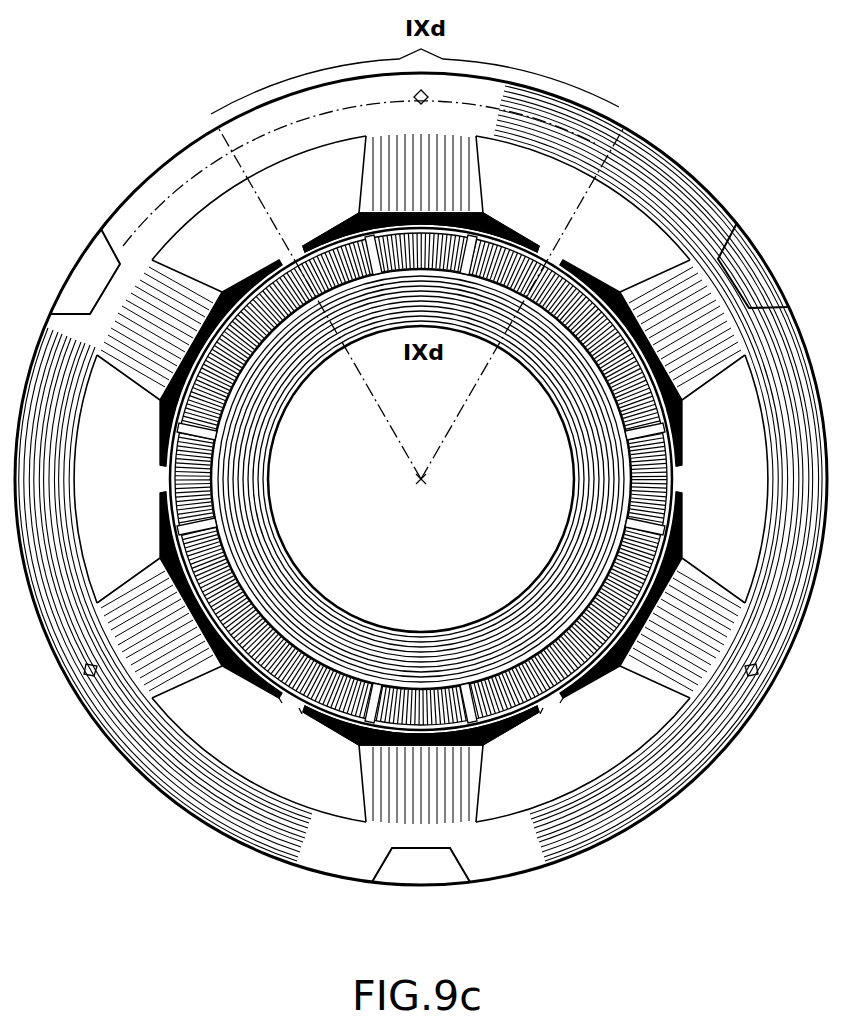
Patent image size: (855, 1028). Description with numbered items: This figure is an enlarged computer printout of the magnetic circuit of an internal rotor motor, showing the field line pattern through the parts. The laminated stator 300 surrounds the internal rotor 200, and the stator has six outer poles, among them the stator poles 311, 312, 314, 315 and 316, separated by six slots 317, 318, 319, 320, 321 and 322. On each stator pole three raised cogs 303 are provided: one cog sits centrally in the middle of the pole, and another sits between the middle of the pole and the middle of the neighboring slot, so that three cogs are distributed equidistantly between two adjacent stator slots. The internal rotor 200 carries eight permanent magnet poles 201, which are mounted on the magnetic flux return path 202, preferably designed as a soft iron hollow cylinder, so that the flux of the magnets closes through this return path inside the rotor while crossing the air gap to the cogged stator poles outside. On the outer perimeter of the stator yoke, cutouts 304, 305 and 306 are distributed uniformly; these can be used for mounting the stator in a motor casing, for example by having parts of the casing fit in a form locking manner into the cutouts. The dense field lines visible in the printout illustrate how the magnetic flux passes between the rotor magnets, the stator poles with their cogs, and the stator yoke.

The internal rotor 200 is at (524, 368).
The permanent magnet poles 201 is at (270, 418).
The magnetic flux return path 202 is at (377, 640).
The laminated stator 300 is at (630, 118).
The cogs 303 is at (348, 216).
The cutout 304 is at (417, 868).
The cutout 305 is at (85, 290).
The cutout 306 is at (752, 262).
The stator pole 311 is at (680, 640).
The stator pole 312 is at (436, 802).
The stator pole 314 is at (200, 268).
The stator pole 315 is at (366, 165).
The stator pole 316 is at (719, 368).
The slot 317 is at (560, 704).
The slot 318 is at (300, 700).
The slot 319 is at (170, 477).
The slot 320 is at (292, 251).
The slot 321 is at (555, 258).
The slot 322 is at (678, 482).